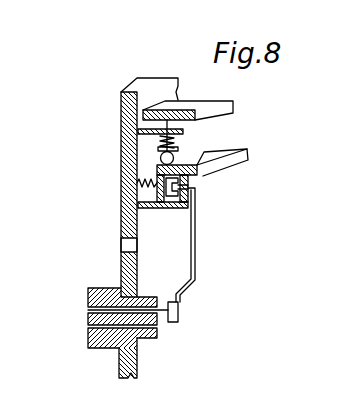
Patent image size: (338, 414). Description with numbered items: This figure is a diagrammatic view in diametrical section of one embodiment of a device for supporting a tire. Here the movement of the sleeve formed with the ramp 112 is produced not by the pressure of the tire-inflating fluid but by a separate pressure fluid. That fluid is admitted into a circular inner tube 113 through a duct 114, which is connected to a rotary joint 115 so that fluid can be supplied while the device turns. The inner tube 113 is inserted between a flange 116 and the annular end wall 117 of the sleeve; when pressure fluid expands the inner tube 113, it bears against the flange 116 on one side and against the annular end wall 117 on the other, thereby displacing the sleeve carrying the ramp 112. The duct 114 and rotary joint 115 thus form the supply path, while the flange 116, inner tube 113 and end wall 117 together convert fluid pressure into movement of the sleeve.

The ramp 112 is at (203, 156).
The circular inner tube 113 is at (137, 200).
The duct 114 is at (195, 262).
The rotary joint 115 is at (178, 312).
The flange 116 is at (188, 193).
The annular end wall 117 is at (121, 146).